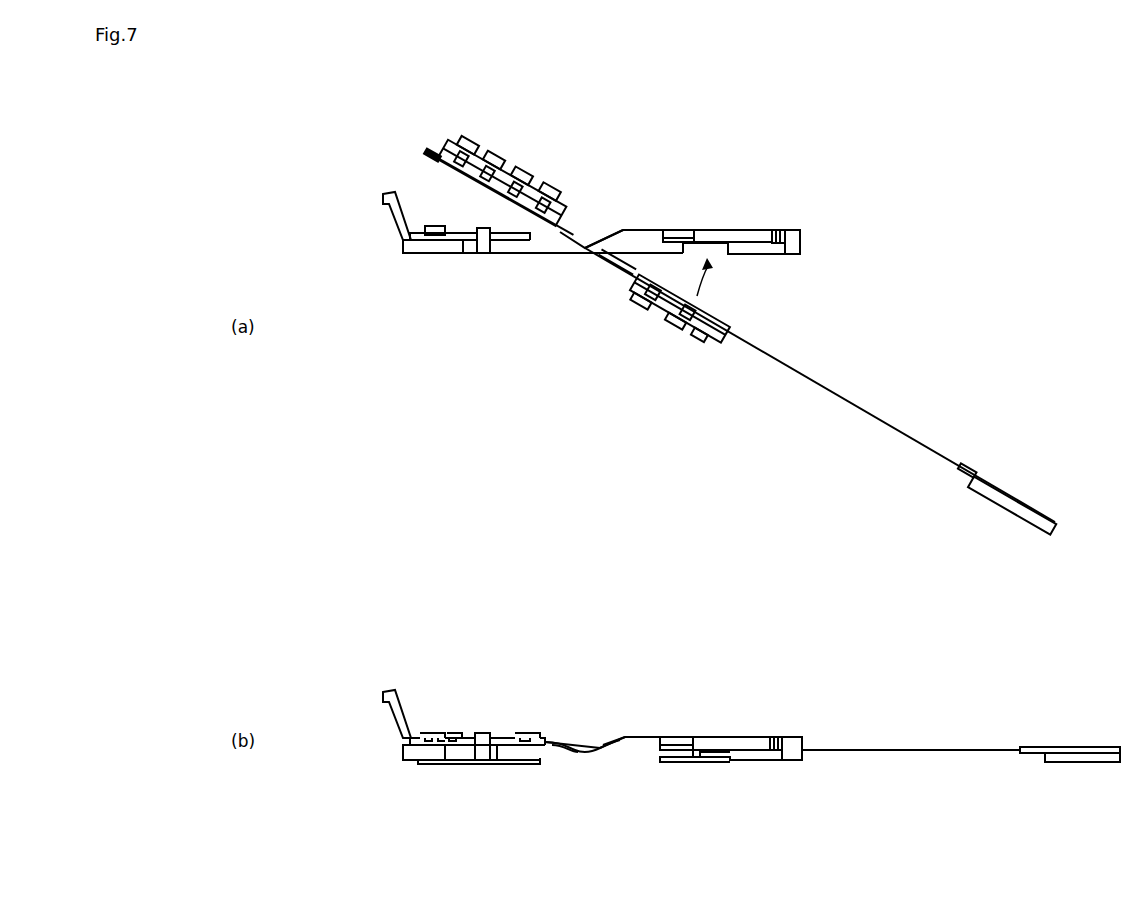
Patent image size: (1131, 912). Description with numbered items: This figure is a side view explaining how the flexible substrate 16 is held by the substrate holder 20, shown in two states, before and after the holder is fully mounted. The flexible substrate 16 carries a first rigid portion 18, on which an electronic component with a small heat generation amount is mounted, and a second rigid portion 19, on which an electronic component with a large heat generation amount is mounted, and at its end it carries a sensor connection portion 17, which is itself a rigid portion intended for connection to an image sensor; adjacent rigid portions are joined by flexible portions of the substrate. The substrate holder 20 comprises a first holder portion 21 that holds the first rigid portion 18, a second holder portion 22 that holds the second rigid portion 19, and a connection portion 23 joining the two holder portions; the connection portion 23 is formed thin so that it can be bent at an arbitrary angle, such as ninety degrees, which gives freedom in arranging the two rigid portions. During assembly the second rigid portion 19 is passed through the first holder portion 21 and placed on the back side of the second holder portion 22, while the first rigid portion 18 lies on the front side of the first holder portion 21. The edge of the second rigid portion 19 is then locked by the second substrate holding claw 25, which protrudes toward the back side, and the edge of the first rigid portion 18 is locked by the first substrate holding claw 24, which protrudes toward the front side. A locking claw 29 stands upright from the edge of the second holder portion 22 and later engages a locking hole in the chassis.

The flexible substrate 16 is at (861, 402).
The sensor connection portion 17 is at (1008, 508).
The first rigid portion 18 is at (733, 343).
The second rigid portion 19 is at (433, 219).
The substrate holder 20 is at (806, 234).
The first holder portion 21 is at (750, 230).
The second holder portion 22 is at (456, 256).
The connection portion 23 is at (608, 247).
The first substrate holding claw 24 is at (763, 257).
The second substrate holding claw 25 is at (488, 256).
The locking claw 29 is at (385, 200).